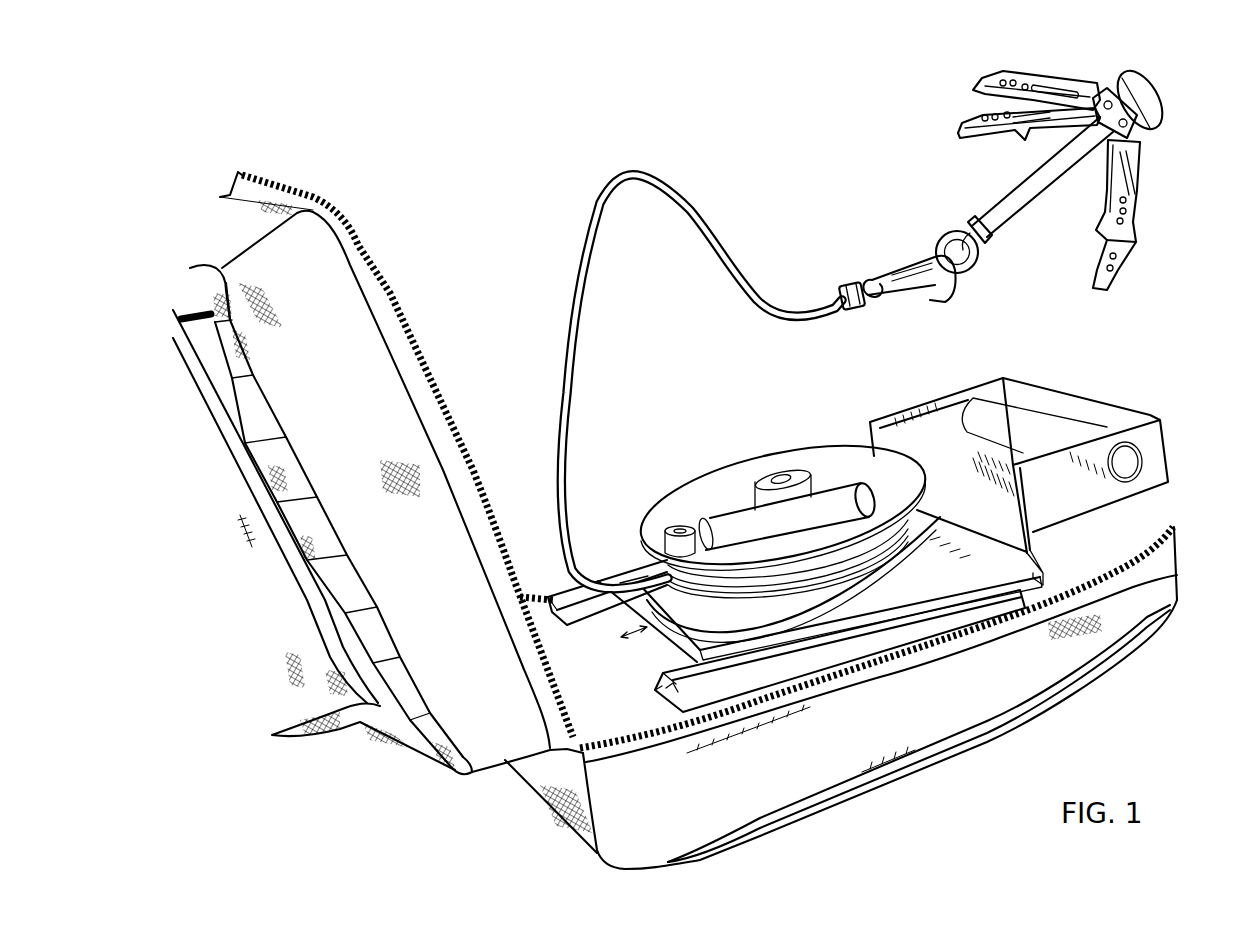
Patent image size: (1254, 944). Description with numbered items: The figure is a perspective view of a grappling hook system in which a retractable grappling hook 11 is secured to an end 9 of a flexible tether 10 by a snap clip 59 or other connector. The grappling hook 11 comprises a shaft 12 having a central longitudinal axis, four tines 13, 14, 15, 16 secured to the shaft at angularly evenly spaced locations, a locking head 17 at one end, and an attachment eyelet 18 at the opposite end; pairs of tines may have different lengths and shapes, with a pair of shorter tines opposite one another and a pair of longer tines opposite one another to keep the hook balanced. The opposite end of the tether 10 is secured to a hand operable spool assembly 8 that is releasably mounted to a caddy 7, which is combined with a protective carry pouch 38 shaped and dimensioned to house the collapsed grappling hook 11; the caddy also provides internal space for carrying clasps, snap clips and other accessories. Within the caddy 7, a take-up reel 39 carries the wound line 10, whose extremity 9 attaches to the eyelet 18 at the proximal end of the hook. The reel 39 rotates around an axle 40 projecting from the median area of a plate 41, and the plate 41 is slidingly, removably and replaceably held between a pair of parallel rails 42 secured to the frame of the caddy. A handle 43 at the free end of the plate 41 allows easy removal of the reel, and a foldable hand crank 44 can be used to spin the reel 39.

The caddy 7 is at (987, 742).
The hand operable spool assembly 8 is at (785, 509).
The end of the tether 9 is at (872, 308).
The flexible tether 10 is at (577, 353).
The retractable grappling hook 11 is at (1081, 180).
The shaft 12 is at (1017, 217).
The tine 13 is at (1140, 200).
The tine 14 is at (1107, 284).
The tine 15 is at (983, 133).
The tine 16 is at (1033, 70).
The locking head 17 is at (1167, 120).
The attachment eyelet 18 is at (970, 277).
The protective carry pouch 38 is at (312, 737).
The take-up reel 39 is at (823, 453).
The axle 40 is at (777, 477).
The plate 41 is at (670, 640).
The parallel rails 42 is at (630, 573).
The handle 43 is at (1033, 426).
The foldable hand crank 44 is at (720, 512).
The snap clip 59 is at (927, 300).